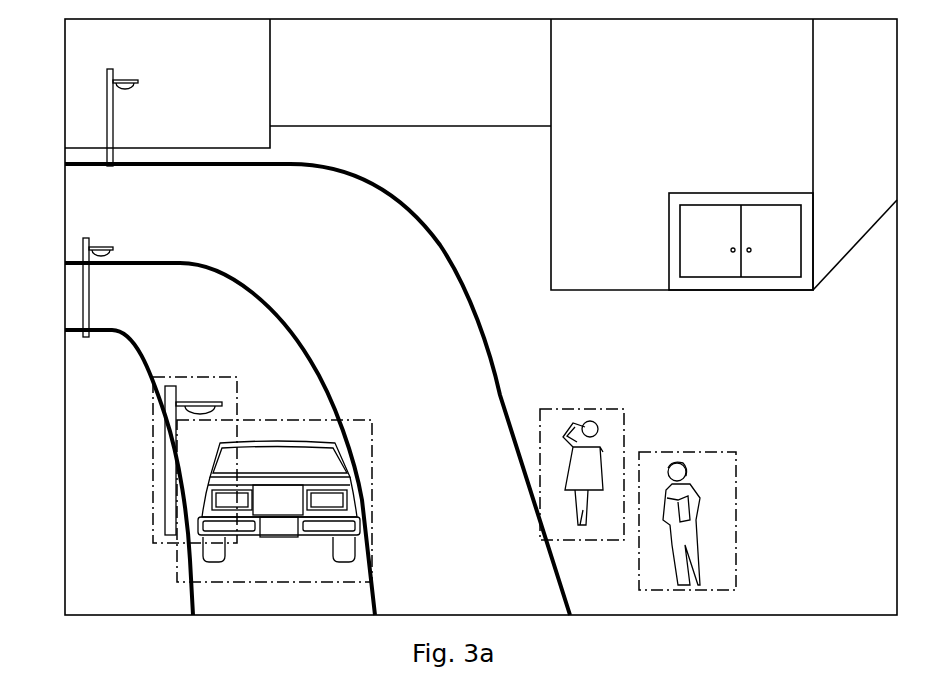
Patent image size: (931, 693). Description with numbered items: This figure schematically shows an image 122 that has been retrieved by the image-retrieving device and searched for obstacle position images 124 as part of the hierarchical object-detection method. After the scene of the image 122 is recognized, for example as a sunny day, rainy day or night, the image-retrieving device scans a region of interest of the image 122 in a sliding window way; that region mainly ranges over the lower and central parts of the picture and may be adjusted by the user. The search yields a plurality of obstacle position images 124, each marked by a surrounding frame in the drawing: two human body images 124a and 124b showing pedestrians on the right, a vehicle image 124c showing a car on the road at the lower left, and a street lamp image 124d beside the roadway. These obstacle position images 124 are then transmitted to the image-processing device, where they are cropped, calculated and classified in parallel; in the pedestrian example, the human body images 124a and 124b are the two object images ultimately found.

The image 122 is at (65, 229).
The obstacle position images 124 is at (628, 202).
The human body image 124a is at (688, 452).
The human body image 124b is at (547, 409).
The vehicle image 124c is at (345, 420).
The street lamp image 124d is at (195, 375).